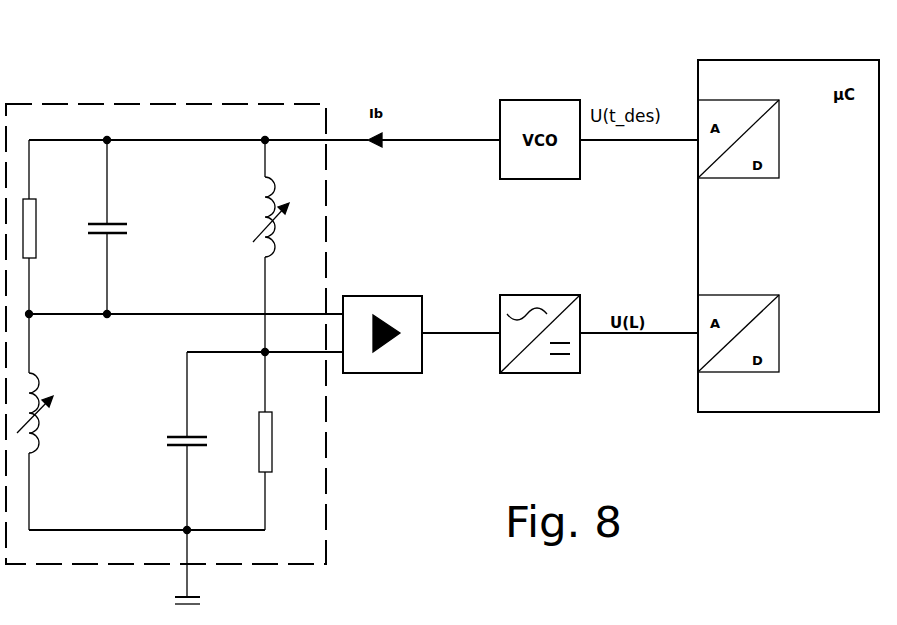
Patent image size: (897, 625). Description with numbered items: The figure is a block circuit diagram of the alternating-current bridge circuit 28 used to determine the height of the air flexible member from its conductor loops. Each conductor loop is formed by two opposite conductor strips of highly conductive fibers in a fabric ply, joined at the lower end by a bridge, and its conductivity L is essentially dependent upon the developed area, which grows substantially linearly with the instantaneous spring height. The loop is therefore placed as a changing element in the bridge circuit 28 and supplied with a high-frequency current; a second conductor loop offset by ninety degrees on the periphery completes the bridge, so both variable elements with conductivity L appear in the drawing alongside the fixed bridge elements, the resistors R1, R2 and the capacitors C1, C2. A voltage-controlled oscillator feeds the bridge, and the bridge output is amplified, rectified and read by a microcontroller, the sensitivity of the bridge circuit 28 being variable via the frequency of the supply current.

The alternating-current bridge circuit 28 is at (100, 95).
The resistor R1 is at (44, 228).
The capacitor C1 is at (116, 218).
The conductivity L is at (153, 315).
The capacitor C2 is at (192, 430).
The resistor R2 is at (280, 442).